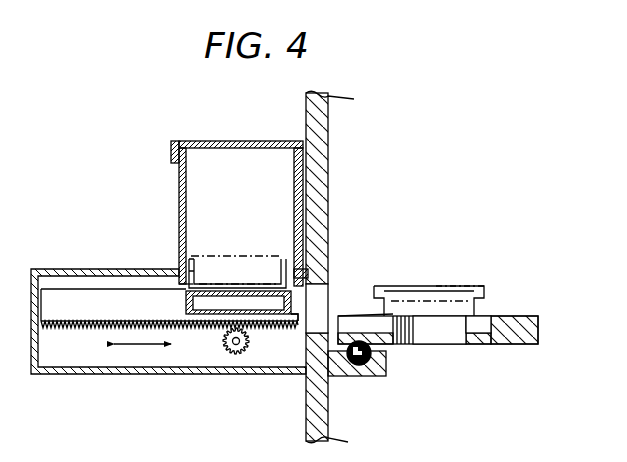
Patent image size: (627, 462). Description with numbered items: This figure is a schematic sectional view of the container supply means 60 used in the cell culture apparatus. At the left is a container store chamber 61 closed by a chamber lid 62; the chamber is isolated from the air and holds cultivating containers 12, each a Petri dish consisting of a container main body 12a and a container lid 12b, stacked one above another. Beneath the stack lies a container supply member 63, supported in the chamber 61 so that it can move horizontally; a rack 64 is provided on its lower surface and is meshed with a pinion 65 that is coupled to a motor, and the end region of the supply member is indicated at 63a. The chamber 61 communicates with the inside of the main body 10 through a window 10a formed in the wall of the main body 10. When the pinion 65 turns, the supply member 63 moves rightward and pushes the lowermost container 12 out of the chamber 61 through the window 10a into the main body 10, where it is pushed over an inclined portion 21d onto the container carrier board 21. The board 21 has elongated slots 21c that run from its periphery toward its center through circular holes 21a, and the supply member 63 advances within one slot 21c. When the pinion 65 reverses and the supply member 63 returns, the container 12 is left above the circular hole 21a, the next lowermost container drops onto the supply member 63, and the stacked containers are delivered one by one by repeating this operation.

The main body 10 is at (322, 148).
The window 10a is at (335, 293).
The cultivating container 12 is at (184, 305).
The container main body 12a is at (197, 263).
The container lid 12b is at (255, 258).
The container carrier board 21 is at (515, 340).
The circular hole 21a is at (440, 336).
The elongated slot 21c is at (482, 320).
The inclined portion 21d is at (356, 312).
The container supply means 60 is at (228, 138).
The container store chamber 61 is at (178, 182).
The chamber lid 62 is at (174, 140).
The container supply member 63 is at (58, 316).
The rack end 63a is at (296, 322).
The rack 64 is at (92, 326).
The pinion 65 is at (222, 340).